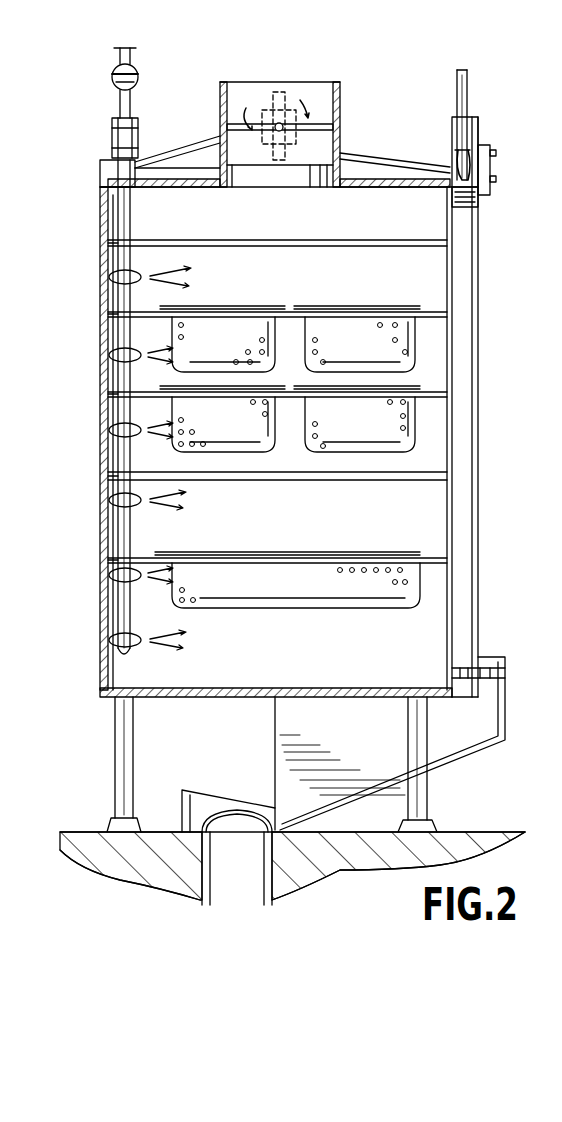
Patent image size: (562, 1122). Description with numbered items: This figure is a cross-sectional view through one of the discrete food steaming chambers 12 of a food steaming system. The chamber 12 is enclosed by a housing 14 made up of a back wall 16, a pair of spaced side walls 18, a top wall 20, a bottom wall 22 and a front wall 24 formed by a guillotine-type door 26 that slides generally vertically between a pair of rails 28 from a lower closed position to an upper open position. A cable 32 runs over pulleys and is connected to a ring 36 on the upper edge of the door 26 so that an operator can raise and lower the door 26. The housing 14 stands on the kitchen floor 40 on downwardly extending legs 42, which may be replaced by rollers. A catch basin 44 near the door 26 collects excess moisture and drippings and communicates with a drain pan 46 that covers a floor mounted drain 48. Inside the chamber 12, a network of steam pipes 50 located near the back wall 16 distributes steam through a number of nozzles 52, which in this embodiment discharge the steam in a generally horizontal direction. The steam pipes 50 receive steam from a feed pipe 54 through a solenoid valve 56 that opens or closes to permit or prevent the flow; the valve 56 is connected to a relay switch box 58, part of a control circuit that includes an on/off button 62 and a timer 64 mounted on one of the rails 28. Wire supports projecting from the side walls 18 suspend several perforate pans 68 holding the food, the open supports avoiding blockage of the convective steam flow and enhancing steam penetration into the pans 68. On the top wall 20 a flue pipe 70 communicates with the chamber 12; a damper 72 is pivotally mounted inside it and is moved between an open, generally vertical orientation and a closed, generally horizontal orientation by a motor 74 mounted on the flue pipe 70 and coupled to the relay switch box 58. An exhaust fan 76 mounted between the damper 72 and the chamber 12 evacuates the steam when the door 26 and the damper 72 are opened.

The food steaming chamber 12 is at (334, 285).
The housing 14 is at (385, 178).
The back wall 16 is at (100, 292).
The side walls 18 is at (342, 644).
The top wall 20 is at (162, 172).
The bottom wall 22 is at (196, 684).
The front wall 24 is at (452, 478).
The door 26 is at (466, 282).
The rails 28 is at (480, 126).
The cable 32 is at (470, 93).
The ring 36 is at (470, 188).
The kitchen floor 40 is at (480, 832).
The legs 42 is at (145, 752).
The catch basin 44 is at (500, 702).
The drain pan 46 is at (242, 772).
The drain 48 is at (240, 882).
The steam pipes 50 is at (132, 214).
The nozzles 52 is at (133, 508).
The feed pipe 54 is at (138, 72).
The solenoid valve 56 is at (112, 140).
The relay switch box 58 is at (100, 176).
The on/off button 62 is at (496, 153).
The timer 64 is at (496, 179).
The perforate pans 68 is at (229, 357).
The flue pipe 70 is at (340, 95).
The damper 72 is at (252, 125).
The motor 74 is at (287, 110).
The exhaust fan 76 is at (270, 190).